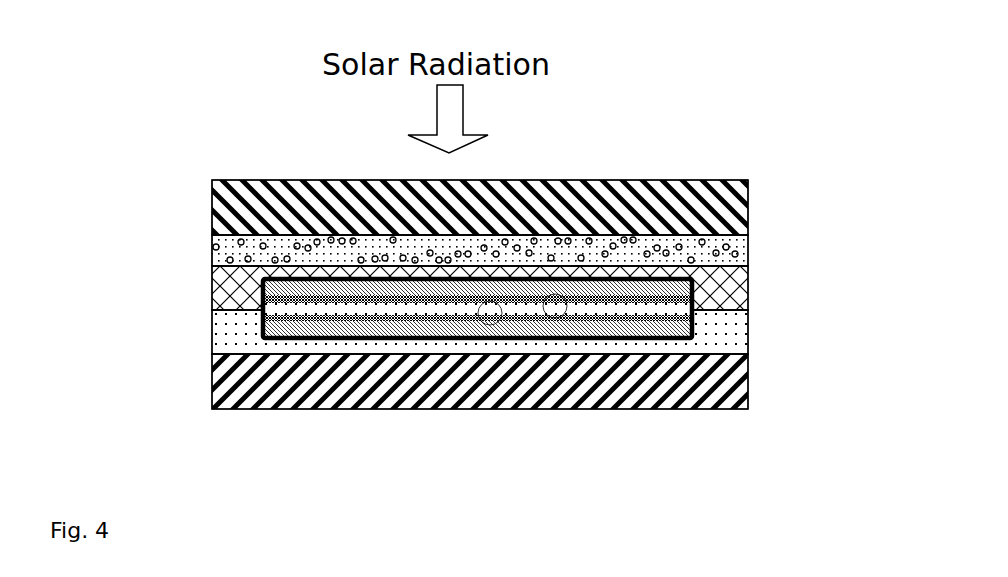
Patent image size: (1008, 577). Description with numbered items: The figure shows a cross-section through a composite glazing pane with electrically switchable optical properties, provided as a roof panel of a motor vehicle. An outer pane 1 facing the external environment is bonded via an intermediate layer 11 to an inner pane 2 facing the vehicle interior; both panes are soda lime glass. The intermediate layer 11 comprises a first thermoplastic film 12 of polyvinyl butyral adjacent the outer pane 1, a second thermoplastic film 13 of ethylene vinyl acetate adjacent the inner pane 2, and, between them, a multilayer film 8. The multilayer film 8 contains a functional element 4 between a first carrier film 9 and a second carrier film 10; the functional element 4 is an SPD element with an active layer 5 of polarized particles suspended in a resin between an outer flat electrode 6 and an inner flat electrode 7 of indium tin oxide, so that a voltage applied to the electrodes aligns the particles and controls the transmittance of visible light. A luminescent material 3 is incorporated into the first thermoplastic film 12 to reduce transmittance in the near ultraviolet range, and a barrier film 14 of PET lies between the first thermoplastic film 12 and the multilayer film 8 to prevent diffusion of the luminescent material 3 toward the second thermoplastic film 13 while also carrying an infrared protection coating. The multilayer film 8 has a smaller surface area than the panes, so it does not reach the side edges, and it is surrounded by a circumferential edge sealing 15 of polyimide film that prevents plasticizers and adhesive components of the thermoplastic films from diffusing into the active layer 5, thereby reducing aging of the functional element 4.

The outer pane 1 is at (222, 180).
The inner pane 2 is at (222, 409).
The luminescent material 3 is at (740, 242).
The first thermoplastic film 12 is at (747, 259).
The barrier film 14 is at (748, 291).
The second thermoplastic film 13 is at (733, 332).
The intermediate layer 11 is at (449, 305).
The edge sealing 15 is at (260, 320).
The first carrier film 9 is at (660, 293).
The outer flat electrode 6 is at (610, 297).
The second carrier film 10 is at (618, 310).
The inner flat electrode 7 is at (584, 320).
The active layer 5 is at (638, 328).
The multilayer film 8 is at (493, 322).
The functional element 4 is at (557, 310).